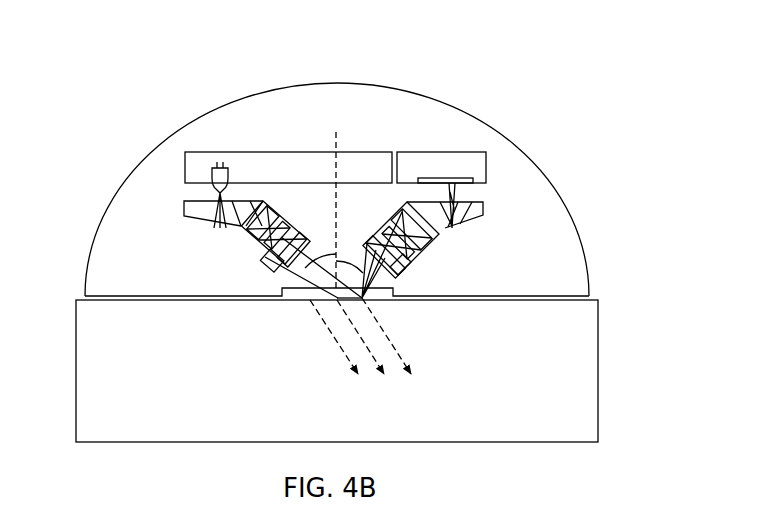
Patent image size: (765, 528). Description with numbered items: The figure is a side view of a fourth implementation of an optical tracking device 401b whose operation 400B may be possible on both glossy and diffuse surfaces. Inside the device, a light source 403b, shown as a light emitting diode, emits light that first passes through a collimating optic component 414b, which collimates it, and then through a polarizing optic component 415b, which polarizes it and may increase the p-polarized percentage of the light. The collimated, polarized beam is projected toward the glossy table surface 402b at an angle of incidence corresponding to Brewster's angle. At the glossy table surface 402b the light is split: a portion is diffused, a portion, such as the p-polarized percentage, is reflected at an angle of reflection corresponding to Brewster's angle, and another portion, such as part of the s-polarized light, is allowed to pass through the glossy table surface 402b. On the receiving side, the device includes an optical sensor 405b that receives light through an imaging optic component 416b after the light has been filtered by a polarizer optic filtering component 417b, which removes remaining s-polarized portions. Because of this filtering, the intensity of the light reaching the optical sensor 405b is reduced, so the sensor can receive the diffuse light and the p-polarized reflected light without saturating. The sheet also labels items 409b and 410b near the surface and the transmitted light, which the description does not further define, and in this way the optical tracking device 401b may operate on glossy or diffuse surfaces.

The operation on both glossy and diffuse surfaces 400B is at (174, 82).
The optical tracking device 401b is at (106, 205).
The glossy table surface 402b is at (76, 359).
The light source 403b is at (185, 152).
The optical sensor 405b is at (407, 152).
The collimating optic component 414b is at (247, 236).
The polarizing optic component 415b is at (266, 264).
The imaging optic component 416b is at (449, 244).
The polarizer optic filtering component 417b is at (412, 267).
The sensing spot on surface 409b is at (363, 300).
The transmitted light rays 410b is at (333, 341).